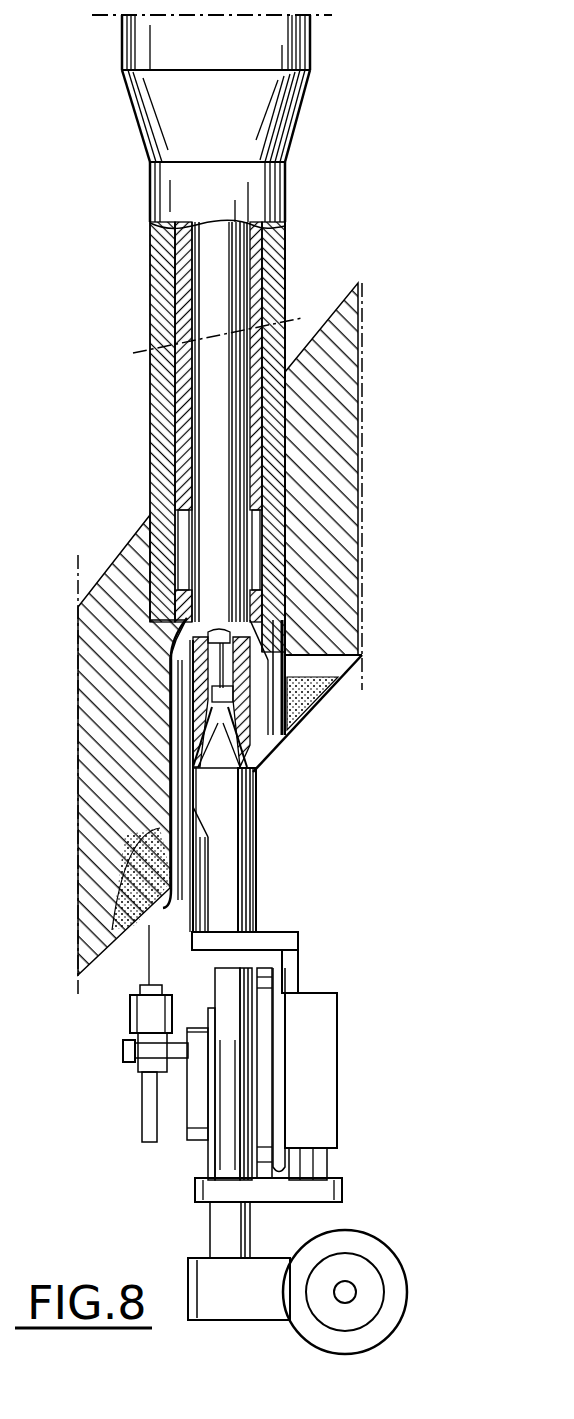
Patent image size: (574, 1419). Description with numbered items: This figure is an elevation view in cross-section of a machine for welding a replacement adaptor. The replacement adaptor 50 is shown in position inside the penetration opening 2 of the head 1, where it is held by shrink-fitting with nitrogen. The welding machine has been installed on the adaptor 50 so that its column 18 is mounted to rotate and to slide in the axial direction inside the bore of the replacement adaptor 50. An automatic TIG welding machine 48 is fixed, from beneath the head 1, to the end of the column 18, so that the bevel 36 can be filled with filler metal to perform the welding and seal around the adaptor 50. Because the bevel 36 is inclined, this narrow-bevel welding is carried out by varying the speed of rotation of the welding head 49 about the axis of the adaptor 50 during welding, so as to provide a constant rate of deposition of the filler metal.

The head 1 is at (342, 347).
The penetration opening 2 is at (283, 535).
The column 18 is at (227, 268).
The bevel 36 is at (290, 733).
The automatic TIG welding machine 48 is at (349, 1103).
The welding head 49 is at (150, 1010).
The replacement adaptor 50 is at (303, 97).